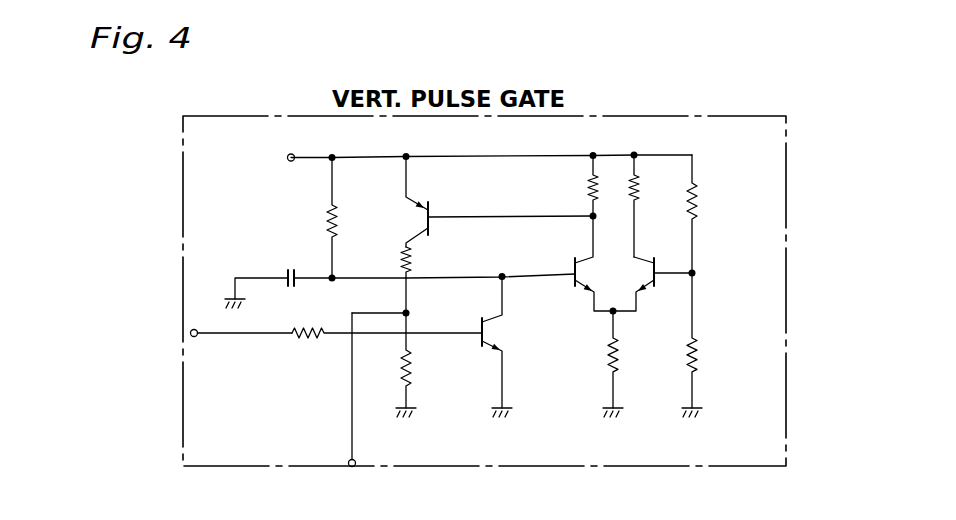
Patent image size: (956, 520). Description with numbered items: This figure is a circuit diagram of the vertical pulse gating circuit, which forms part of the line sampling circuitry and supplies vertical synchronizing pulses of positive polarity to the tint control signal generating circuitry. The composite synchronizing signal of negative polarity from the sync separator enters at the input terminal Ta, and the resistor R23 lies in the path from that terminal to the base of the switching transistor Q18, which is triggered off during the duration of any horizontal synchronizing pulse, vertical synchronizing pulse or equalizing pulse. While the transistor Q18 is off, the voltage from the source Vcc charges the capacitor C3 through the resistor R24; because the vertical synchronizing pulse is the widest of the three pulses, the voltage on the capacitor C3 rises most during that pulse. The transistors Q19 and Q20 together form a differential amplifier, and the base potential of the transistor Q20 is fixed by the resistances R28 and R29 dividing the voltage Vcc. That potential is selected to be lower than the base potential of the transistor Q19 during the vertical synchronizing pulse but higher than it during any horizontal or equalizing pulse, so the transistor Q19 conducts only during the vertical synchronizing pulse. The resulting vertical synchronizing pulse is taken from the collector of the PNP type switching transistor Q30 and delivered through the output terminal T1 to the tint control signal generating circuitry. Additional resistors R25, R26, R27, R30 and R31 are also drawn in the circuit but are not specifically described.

The voltage source Vcc is at (256, 163).
The resistor R24 is at (329, 225).
The PNP type switching transistor Q30 is at (395, 202).
The resistor R31 is at (412, 262).
The capacitor C3 is at (278, 277).
The input terminal Ta is at (207, 350).
The resistor R23 is at (305, 340).
The output terminal T1 is at (347, 460).
The resistor R30 is at (412, 368).
The switching transistor Q18 is at (513, 347).
The resistor R26 is at (588, 192).
The transistor Q19 is at (576, 267).
The resistor R27 is at (660, 201).
The transistor Q20 is at (652, 288).
The resistance R29 is at (695, 205).
The resistor R25 is at (617, 359).
The resistance R28 is at (698, 360).